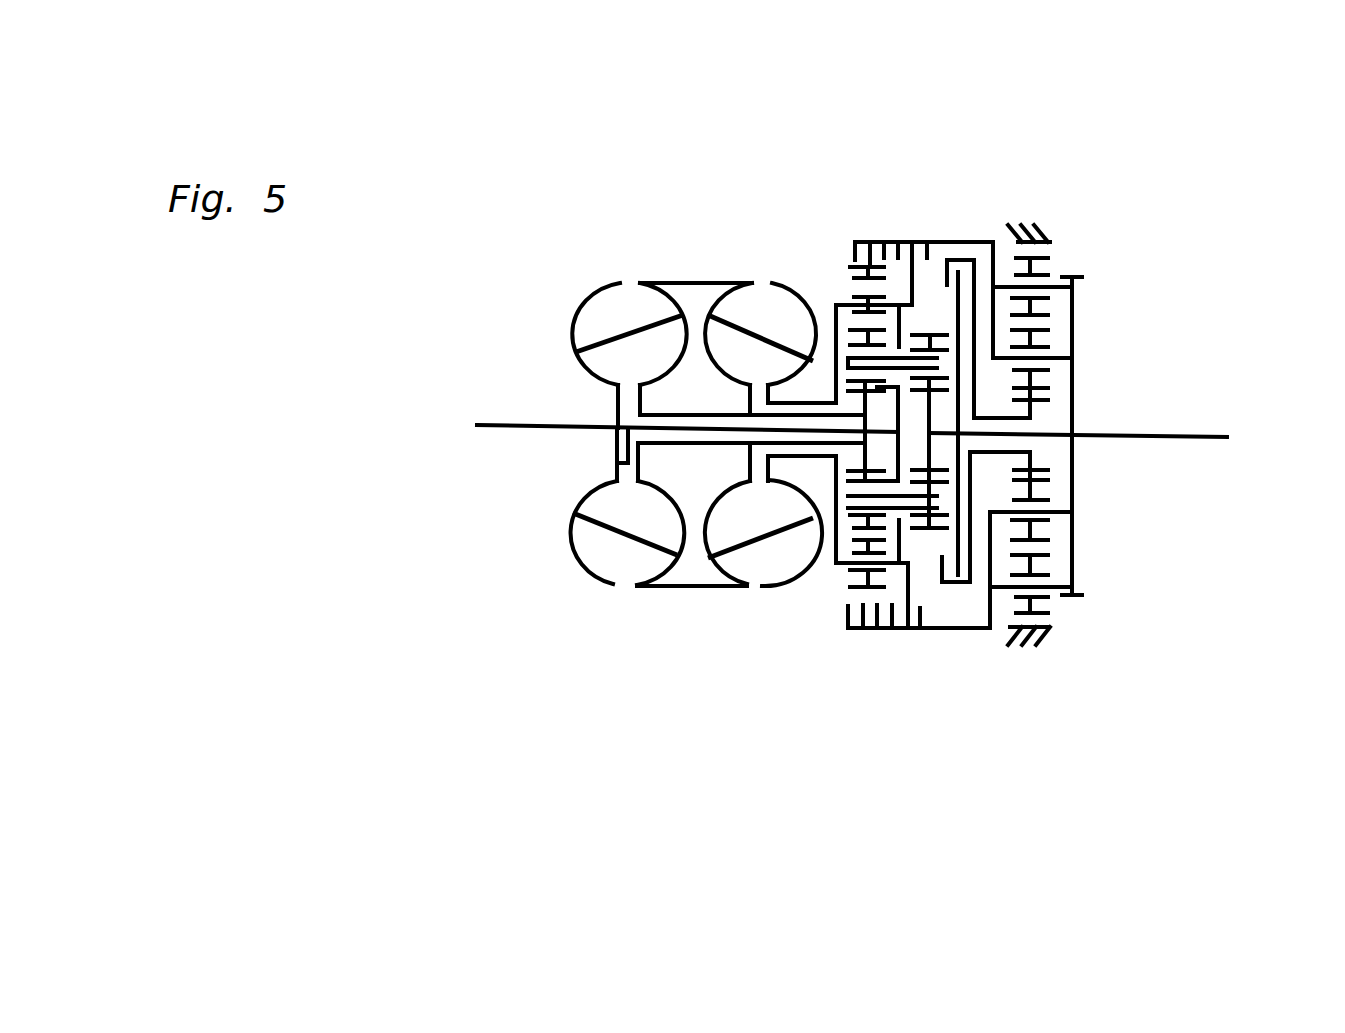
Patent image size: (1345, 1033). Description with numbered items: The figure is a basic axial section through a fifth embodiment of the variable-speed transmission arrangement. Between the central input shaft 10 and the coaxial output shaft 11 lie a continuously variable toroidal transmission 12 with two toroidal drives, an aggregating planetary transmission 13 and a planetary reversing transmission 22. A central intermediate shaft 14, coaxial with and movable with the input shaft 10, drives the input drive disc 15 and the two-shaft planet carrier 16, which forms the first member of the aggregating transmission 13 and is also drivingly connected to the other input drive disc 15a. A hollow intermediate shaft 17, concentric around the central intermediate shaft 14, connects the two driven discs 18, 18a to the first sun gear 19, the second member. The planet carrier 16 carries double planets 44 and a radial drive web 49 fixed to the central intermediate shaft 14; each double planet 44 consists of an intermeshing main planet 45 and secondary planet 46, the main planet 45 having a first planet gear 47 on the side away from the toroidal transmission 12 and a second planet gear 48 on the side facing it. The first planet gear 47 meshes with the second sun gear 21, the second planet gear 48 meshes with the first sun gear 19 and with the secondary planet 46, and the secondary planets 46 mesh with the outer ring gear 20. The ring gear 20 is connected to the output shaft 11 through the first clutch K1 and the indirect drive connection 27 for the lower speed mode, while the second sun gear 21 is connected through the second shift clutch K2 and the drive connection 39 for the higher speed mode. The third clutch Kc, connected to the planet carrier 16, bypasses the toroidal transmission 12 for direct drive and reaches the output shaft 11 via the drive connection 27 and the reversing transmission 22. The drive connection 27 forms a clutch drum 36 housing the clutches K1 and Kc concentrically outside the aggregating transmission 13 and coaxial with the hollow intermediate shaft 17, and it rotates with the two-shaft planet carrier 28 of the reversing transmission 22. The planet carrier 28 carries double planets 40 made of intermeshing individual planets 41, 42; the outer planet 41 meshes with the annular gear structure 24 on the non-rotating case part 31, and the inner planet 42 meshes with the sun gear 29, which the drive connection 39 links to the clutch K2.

The input shaft 10 is at (522, 430).
The output shaft 11 is at (1156, 442).
The continuously variable toroidal transmission 12 is at (690, 205).
The aggregating planetary transmission 13 is at (893, 200).
The central intermediate shaft 14 is at (618, 464).
The input drive disc 15 is at (597, 287).
The input drive disc 15a is at (822, 590).
The two-shaft planet carrier 16 is at (830, 575).
The hollow intermediate shaft 17 is at (668, 445).
The driven disc 18 is at (640, 283).
The driven disc 18a is at (752, 283).
The first sun gear 19 is at (905, 393).
The outer ring gear 20 is at (848, 603).
The second sun gear 21 is at (905, 393).
The planetary reversing transmission 22 is at (1080, 205).
The annular gear structure 24 is at (1048, 606).
The drive connection 27 is at (990, 642).
The two-shaft planet carrier 28 is at (1076, 415).
The sun gear 29 is at (1050, 400).
The non-rotating case part 31 is at (1036, 648).
The clutch drum 36 is at (885, 632).
The drive connection 39 is at (998, 412).
The double planets 40 is at (1057, 322).
The outer individual planet 41 is at (1048, 259).
The inner individual planet 42 is at (1048, 540).
The double planets 44 is at (834, 533).
The main planet 45 is at (851, 368).
The secondary planet 46 is at (855, 278).
The first planet gear 47 is at (934, 335).
The second planet gear 48 is at (834, 333).
The radial drive web 49 is at (901, 540).
The first clutch K1 is at (853, 645).
The third clutch Kc is at (907, 643).
The second shift clutch K2 is at (964, 600).